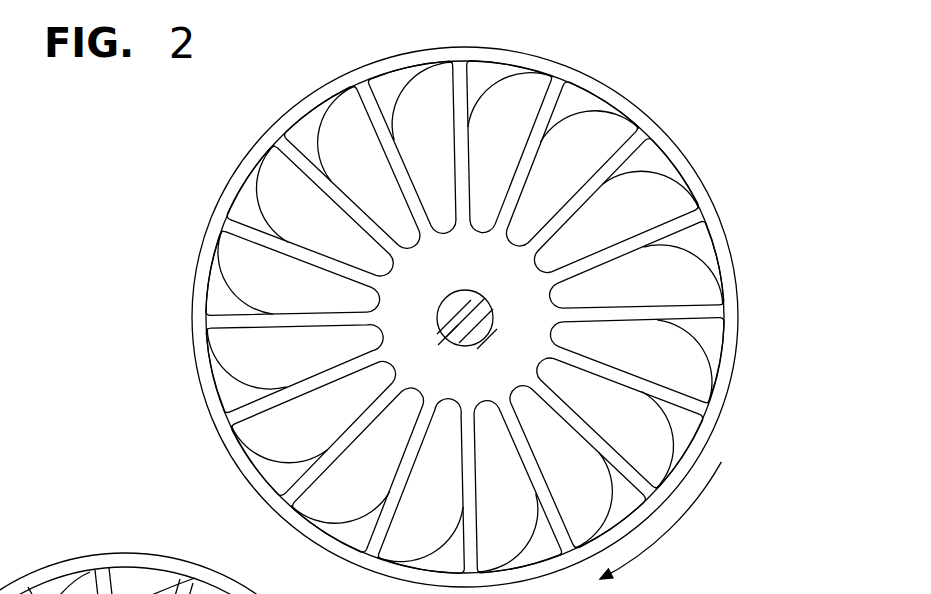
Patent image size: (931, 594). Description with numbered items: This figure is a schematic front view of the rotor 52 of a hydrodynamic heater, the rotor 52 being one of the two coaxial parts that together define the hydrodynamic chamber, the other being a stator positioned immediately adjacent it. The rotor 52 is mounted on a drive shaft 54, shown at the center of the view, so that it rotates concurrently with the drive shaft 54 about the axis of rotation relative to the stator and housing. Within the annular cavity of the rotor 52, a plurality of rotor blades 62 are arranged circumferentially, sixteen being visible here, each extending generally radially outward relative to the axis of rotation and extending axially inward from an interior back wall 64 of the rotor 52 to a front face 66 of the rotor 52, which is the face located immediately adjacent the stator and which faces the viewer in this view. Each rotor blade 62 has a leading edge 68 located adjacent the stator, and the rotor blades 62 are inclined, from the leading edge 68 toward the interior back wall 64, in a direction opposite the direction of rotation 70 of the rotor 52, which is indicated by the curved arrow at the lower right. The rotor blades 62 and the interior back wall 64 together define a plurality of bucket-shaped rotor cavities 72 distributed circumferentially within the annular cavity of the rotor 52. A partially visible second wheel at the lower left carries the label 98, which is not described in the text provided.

The rotor 52 is at (577, 71).
The drive shaft 54 is at (464, 347).
The rotor blade 62 is at (280, 207).
The interior back wall 64 is at (228, 394).
The front face 66 is at (456, 268).
The leading edge 68 is at (340, 197).
The direction of rotation 70 is at (677, 520).
The bucket-shaped rotor cavity 72 is at (647, 203).
The second impeller 98 is at (135, 593).